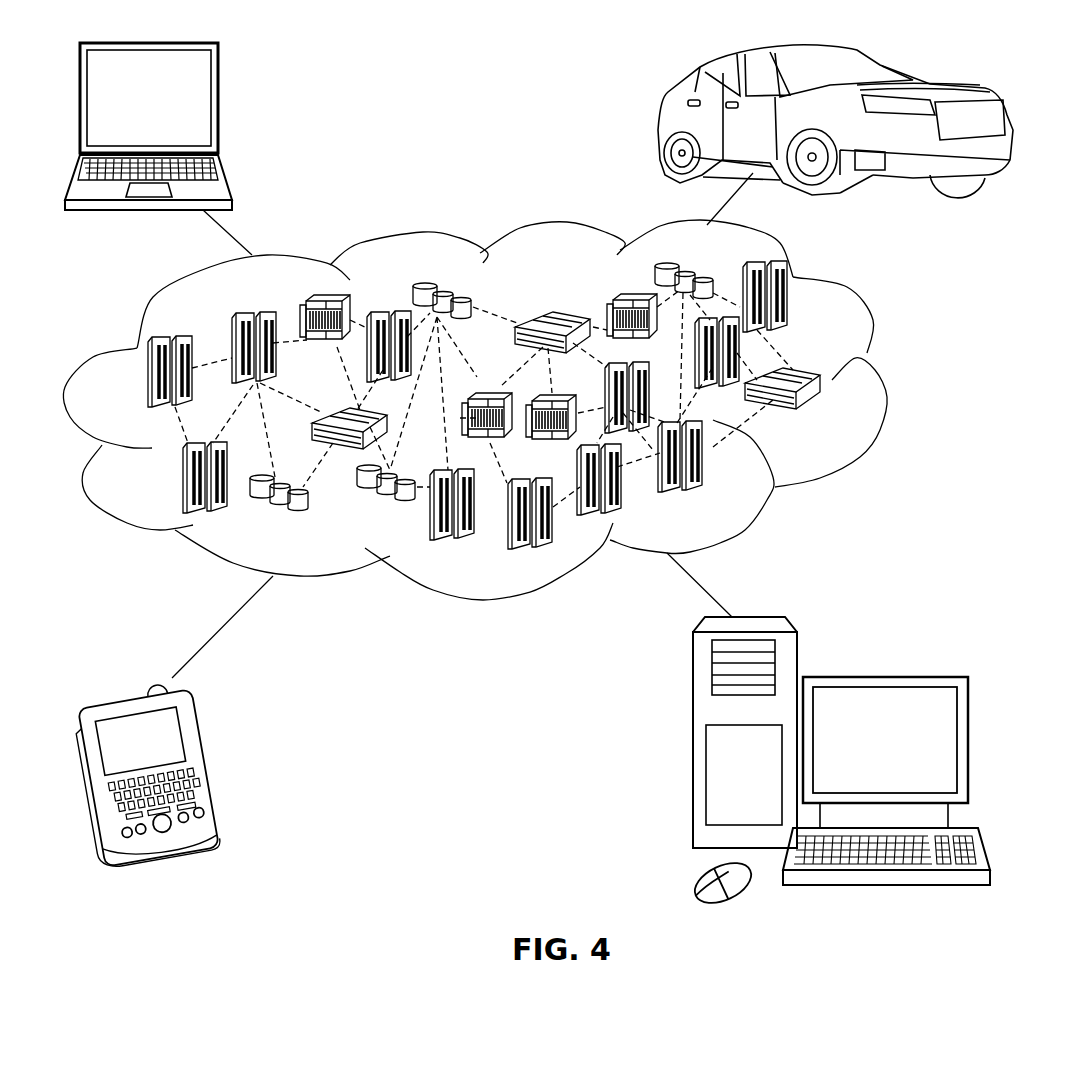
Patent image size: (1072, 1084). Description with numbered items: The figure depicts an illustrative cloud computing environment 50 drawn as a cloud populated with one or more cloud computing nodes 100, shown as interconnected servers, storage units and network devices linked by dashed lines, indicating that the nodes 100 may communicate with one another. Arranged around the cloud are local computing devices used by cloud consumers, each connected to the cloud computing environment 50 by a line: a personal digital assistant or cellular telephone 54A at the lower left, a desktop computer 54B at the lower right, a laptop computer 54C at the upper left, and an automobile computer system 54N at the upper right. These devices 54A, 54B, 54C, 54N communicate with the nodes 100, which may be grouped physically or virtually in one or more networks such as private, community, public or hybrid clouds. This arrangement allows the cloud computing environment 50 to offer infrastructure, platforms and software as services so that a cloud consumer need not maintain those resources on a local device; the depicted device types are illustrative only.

The cloud computing environment 50 is at (884, 385).
The cloud computing nodes 100 is at (825, 413).
The personal digital assistant (PDA) or cellular telephone 54A is at (208, 771).
The desktop computer 54B is at (883, 677).
The laptop computer 54C is at (218, 105).
The automobile computer system 54N is at (660, 120).